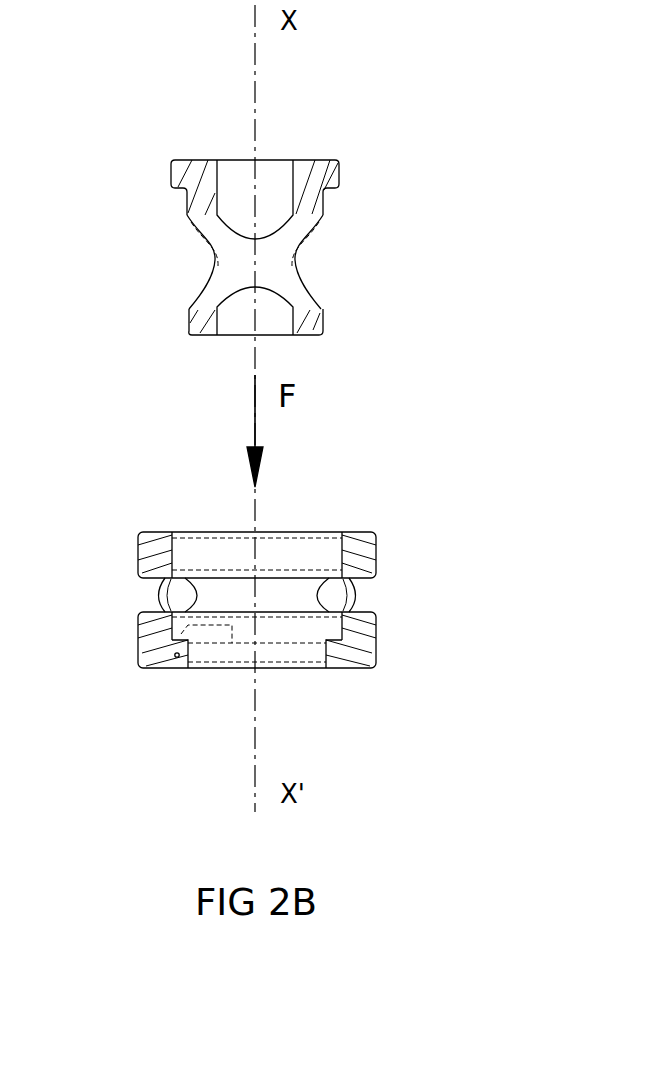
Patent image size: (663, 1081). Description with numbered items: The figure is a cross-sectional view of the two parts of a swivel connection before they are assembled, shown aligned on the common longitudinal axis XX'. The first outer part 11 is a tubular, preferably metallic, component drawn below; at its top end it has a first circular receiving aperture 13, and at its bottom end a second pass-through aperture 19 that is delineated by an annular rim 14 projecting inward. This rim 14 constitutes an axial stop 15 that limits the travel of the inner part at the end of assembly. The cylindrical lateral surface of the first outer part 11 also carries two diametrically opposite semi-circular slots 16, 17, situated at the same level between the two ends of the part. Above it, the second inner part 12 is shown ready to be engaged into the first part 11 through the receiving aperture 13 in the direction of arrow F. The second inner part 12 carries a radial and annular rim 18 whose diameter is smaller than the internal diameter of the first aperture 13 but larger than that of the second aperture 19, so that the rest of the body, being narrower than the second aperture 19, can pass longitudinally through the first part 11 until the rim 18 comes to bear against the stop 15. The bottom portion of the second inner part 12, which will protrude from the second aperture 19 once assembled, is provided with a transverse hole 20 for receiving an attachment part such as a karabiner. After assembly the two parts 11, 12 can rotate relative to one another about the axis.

The first outer part 11 is at (298, 607).
The second inner part 12 is at (344, 247).
The first circular receiving aperture 13 is at (315, 533).
The annular rim 14 is at (177, 657).
The axial stop 15 is at (235, 643).
The semi-circular slot 16 is at (153, 595).
The semi-circular slot 17 is at (363, 594).
The radial and annular rim 18 is at (338, 186).
The second pass-through aperture 19 is at (325, 644).
The transverse hole 20 is at (303, 283).